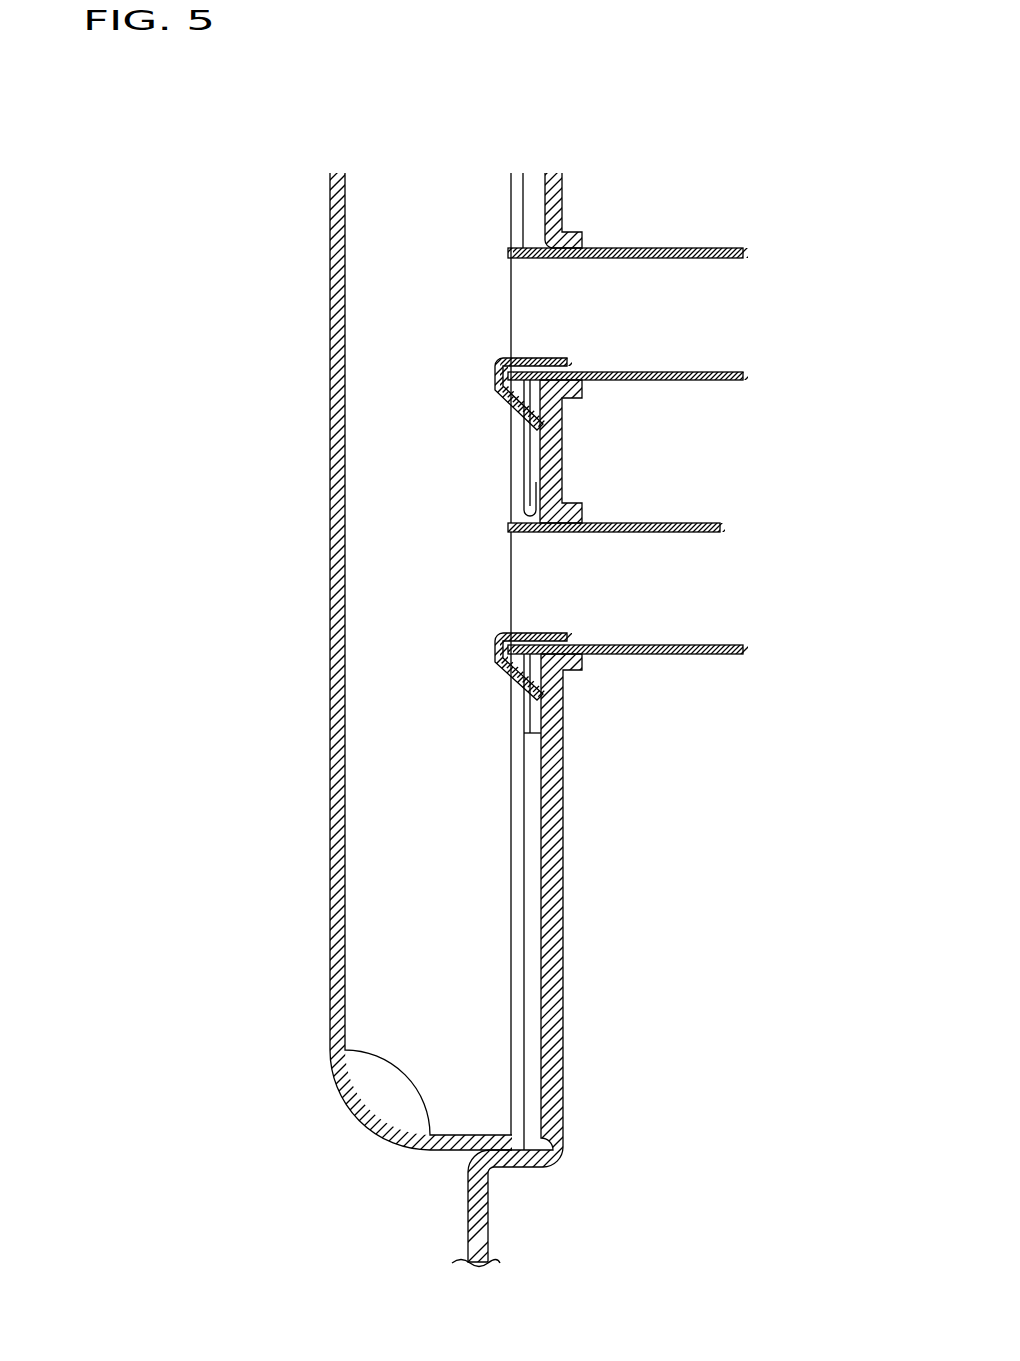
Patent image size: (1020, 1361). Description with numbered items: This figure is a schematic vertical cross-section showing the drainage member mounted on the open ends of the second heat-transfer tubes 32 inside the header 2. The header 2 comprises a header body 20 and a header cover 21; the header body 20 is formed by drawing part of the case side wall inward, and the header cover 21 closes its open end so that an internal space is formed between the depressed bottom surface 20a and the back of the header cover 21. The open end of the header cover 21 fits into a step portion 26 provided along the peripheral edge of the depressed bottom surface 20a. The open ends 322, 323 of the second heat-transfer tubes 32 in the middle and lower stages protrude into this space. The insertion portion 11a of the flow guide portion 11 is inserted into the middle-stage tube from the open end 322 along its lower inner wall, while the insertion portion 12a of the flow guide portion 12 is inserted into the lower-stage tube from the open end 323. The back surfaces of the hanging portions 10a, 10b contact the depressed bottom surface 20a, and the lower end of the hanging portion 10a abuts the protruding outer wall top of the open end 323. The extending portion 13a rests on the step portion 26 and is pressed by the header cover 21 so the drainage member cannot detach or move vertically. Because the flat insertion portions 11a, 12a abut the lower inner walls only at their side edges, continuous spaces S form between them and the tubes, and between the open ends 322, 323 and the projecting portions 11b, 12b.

The header 2 is at (205, 1072).
The header body 20 is at (510, 720).
The depressed bottom surface 20a is at (545, 860).
The header cover 21 is at (330, 1012).
The step portion 26 is at (515, 1081).
The hanging portion 10a is at (538, 445).
The hanging portion 10b is at (541, 712).
The flow guide portion 11 is at (510, 720).
The insertion portion 11a is at (543, 357).
The projecting portion 11b is at (512, 405).
The flow guide portion 12 is at (510, 720).
The insertion portion 12a is at (545, 632).
The projecting portion 12b is at (515, 680).
The extending portion 13a is at (525, 483).
The second heat-transfer tube 32 is at (674, 312).
The open end 322 is at (510, 308).
The open end 323 is at (510, 600).
The continuous space S is at (568, 371).